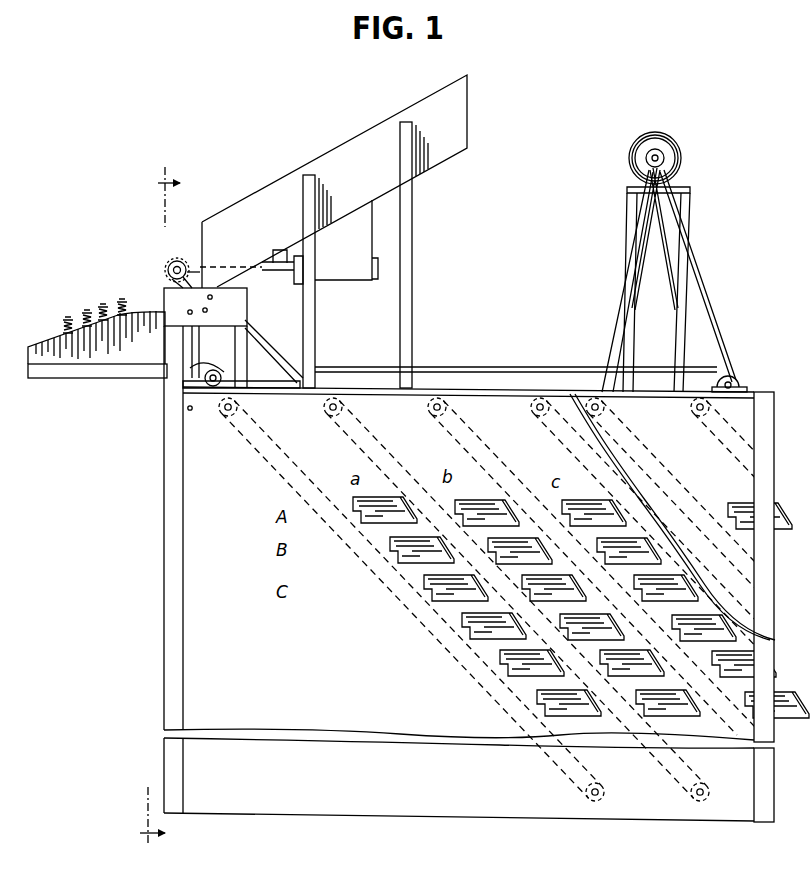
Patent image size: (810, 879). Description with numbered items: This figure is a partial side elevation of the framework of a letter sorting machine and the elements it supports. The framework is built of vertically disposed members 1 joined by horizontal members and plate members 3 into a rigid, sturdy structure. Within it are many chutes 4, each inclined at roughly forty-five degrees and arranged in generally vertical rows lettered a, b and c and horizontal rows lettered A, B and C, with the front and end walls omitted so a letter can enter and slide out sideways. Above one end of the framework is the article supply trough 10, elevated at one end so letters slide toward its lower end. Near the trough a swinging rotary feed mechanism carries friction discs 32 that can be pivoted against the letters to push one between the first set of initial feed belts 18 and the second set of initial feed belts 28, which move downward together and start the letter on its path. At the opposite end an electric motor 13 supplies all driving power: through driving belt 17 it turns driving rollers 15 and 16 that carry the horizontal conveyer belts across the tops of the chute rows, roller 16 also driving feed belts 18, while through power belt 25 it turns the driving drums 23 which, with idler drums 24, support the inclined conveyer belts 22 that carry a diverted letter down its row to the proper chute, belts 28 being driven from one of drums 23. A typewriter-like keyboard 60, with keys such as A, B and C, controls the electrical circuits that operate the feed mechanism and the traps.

The vertically disposed members 1 is at (164, 540).
The plate members 3 is at (327, 822).
The chutes 4 is at (534, 706).
The article feeding or supply trough 10 is at (451, 152).
The electric motor 13 is at (668, 146).
The driving roller 15 is at (738, 380).
The driving roller 16 is at (224, 374).
The driving belt 17 is at (710, 298).
The initial feed belts 18 is at (208, 345).
The conveyer belts 22 is at (352, 453).
The driving drums 23 is at (325, 409).
The idler drums 24 is at (690, 786).
The power belt 25 is at (608, 340).
The initial feed belts 28 is at (197, 365).
The friction discs 32 is at (168, 266).
The keyboard 60 is at (80, 313).